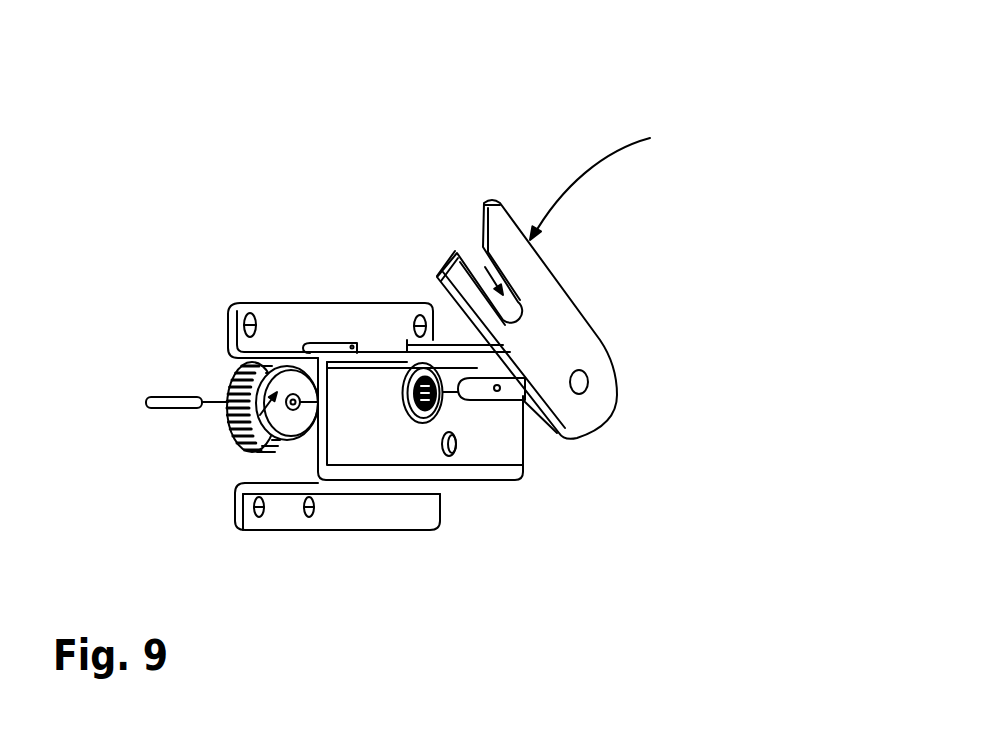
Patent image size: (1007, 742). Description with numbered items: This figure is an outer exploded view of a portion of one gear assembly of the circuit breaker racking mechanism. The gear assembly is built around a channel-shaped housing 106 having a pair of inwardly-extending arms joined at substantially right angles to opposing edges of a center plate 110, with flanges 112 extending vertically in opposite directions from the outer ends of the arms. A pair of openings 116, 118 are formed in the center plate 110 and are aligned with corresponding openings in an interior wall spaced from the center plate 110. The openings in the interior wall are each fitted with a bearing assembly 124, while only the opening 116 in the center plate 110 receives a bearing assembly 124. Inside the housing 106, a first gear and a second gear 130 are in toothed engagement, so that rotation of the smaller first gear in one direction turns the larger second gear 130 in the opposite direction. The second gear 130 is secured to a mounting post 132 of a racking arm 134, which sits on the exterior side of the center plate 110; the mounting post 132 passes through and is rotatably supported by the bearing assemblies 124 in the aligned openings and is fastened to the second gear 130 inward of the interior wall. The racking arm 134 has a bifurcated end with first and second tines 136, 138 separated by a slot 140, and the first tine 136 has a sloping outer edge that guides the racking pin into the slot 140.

The channel-shaped housing 106 is at (538, 485).
The center plate 110 is at (497, 442).
The flanges 112 is at (285, 320).
The opening 116 is at (390, 378).
The opening 118 is at (465, 450).
The bearing assembly 124 is at (413, 364).
The second gear 130 is at (243, 431).
The mounting post 132 is at (525, 432).
The racking arm 134 is at (625, 177).
The first tine 136 is at (502, 240).
The second tine 138 is at (520, 320).
The slot 140 is at (478, 203).